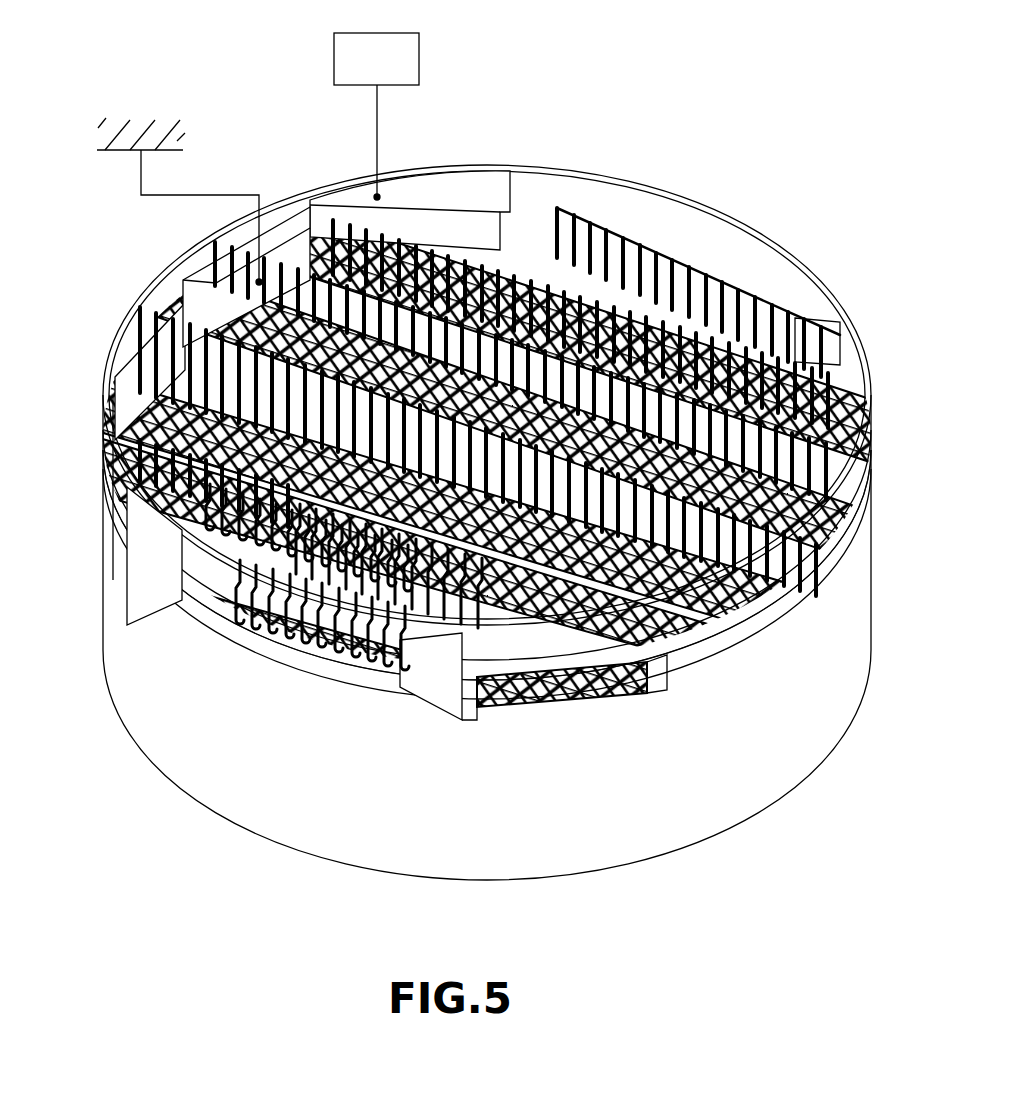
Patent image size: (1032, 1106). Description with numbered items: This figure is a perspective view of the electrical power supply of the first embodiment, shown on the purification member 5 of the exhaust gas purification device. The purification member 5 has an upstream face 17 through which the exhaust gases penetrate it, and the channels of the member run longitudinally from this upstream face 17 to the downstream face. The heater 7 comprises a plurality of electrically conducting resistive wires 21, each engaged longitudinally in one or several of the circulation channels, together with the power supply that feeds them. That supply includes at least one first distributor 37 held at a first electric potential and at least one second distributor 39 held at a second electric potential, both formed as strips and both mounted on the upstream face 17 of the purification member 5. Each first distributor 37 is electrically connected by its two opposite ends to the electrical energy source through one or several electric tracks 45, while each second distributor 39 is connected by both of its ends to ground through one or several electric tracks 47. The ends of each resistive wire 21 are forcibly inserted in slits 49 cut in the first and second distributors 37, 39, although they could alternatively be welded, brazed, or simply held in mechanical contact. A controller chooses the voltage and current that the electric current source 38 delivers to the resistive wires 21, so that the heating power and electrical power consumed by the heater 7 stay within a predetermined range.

The purification member 5 is at (750, 790).
The heater 7 is at (115, 105).
The upstream face 17 is at (600, 690).
The resistive wires 21 is at (250, 628).
The first distributor 37 is at (505, 225).
The electric current source 38 is at (376, 116).
The second distributor 39 is at (307, 218).
The electric tracks 45 is at (835, 528).
The electric tracks 47 is at (805, 597).
The slits 49 is at (728, 293).